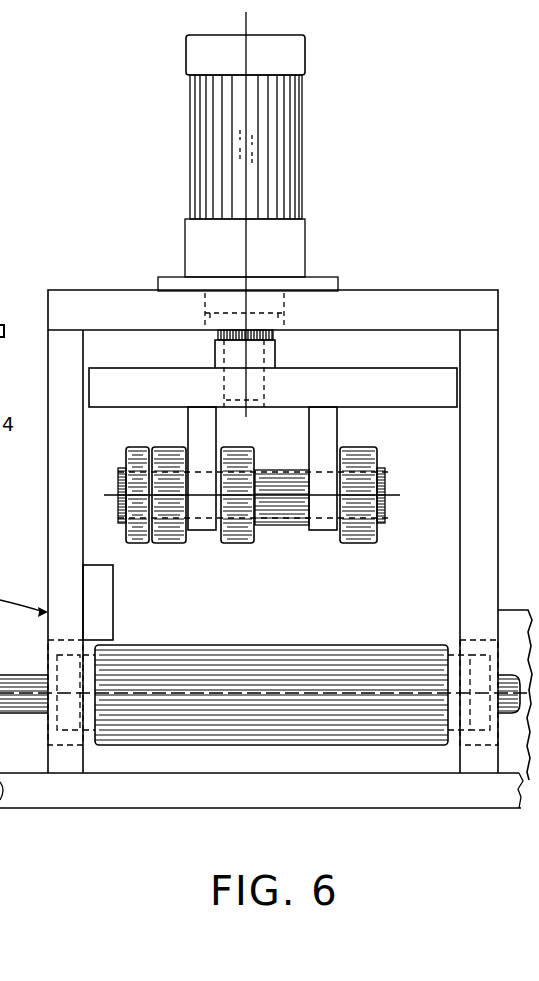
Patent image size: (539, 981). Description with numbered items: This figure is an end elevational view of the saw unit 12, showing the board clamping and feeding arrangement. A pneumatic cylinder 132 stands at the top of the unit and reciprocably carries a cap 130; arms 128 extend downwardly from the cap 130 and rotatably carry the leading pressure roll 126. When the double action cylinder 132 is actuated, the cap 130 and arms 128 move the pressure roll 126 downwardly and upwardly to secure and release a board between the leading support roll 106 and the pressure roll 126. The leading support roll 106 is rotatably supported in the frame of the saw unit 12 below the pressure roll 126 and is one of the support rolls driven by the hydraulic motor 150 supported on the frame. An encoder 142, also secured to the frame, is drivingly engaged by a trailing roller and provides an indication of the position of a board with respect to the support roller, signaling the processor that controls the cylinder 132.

The saw unit 12 is at (449, 208).
The pneumatic cylinder 132 is at (303, 152).
The cap 130 is at (342, 378).
The arms 128 is at (201, 424).
The leading pressure roll 126 is at (137, 545).
The leading support roll 106 is at (187, 663).
The encoder 142 is at (513, 637).
The hydraulic motor 150 is at (513, 612).